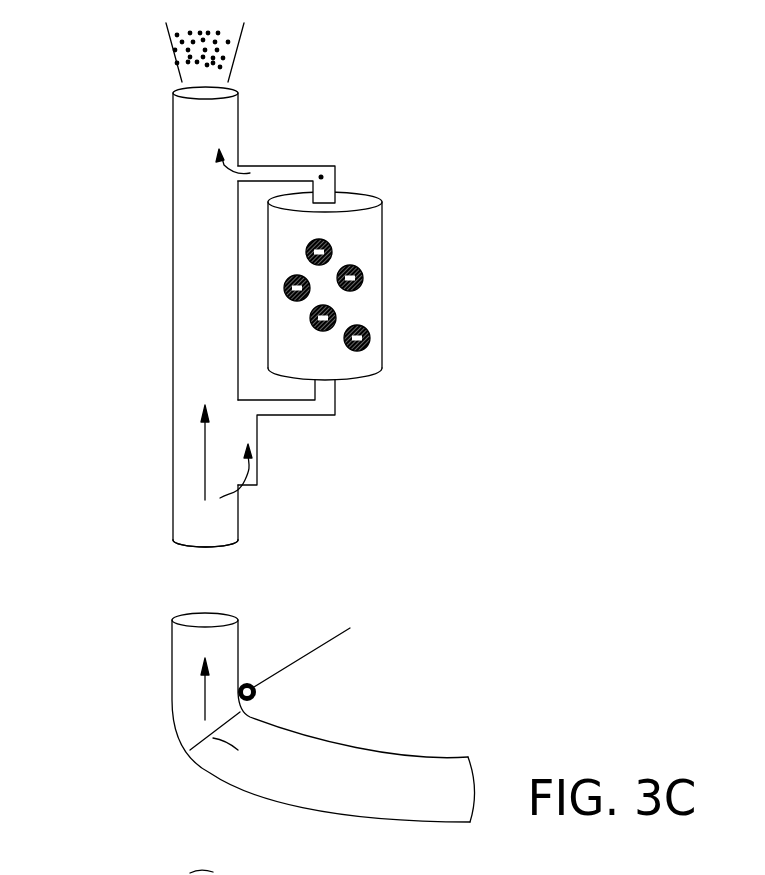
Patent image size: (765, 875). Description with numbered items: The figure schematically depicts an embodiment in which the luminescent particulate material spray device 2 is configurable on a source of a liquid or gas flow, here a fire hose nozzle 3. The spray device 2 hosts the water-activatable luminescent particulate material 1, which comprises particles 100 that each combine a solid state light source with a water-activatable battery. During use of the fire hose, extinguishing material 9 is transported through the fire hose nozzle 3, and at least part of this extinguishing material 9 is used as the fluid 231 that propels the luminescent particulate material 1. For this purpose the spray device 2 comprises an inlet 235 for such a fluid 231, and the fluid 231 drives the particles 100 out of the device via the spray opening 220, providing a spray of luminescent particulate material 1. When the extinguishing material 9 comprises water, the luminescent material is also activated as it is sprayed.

The water-activatable luminescent particulate material 1 is at (362, 254).
The luminescent particulate material spray device 2 is at (392, 313).
The fire hose nozzle 3 is at (82, 705).
The extinguishing material 9 is at (206, 482).
The particles 100 is at (181, 36).
The spray opening 220 is at (158, 87).
The fluid 231 is at (205, 437).
The inlet 235 is at (197, 571).